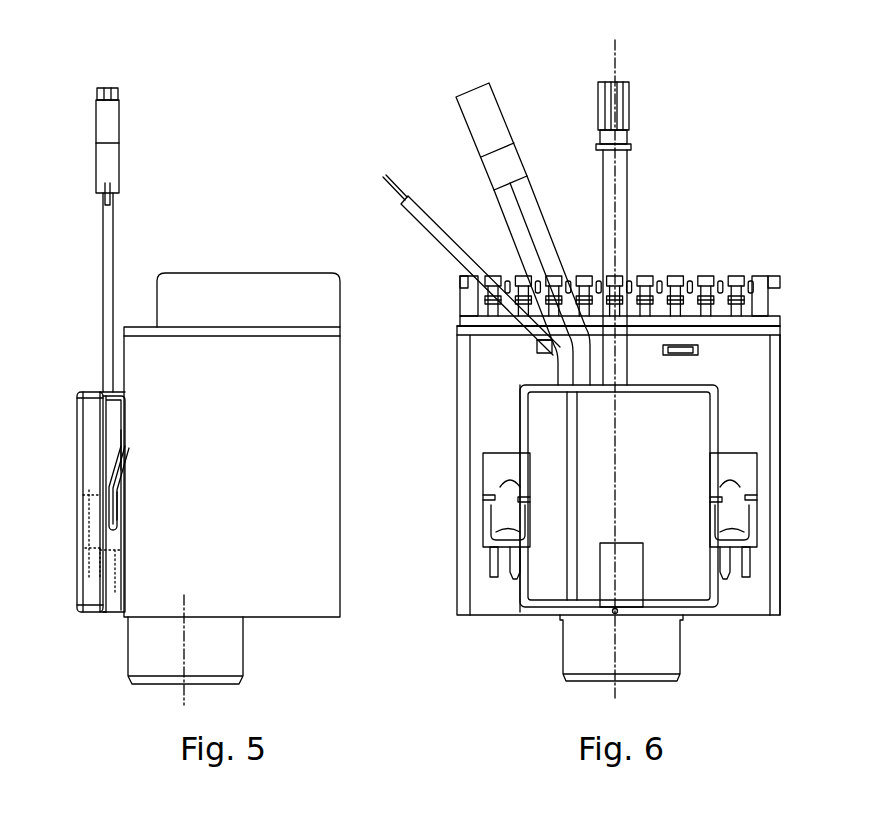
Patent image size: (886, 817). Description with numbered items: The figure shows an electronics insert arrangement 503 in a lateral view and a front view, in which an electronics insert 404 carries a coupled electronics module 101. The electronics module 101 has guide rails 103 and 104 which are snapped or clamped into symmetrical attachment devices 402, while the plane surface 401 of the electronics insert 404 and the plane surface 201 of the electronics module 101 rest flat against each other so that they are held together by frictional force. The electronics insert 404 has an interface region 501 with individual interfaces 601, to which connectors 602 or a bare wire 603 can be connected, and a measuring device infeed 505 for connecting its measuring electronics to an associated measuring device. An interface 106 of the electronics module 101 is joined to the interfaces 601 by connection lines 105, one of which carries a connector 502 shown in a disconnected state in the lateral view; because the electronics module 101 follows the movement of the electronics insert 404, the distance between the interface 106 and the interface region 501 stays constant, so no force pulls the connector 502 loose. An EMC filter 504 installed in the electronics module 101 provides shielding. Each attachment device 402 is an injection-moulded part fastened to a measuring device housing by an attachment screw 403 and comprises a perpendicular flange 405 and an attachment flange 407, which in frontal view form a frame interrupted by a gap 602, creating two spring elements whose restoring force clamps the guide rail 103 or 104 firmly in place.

In FIG. 5, the electronics module 101 is at (77, 458).
In FIG. 6, the electronics module 101 is at (714, 368).
In FIG. 5, the guide rail 103 is at (120, 463).
In FIG. 6, the guide rail 103 is at (709, 417).
In FIG. 6, the guide rail 104 is at (520, 426).
In FIG. 5, the connection line 105 is at (103, 279).
In FIG. 6, the connection line 105 is at (448, 237).
In FIG. 5, the interface 106 is at (103, 392).
In FIG. 6, the interface 106 is at (628, 382).
In FIG. 5, the plane surface 201 is at (118, 416).
In FIG. 5, the plane surface 401 is at (121, 438).
In FIG. 5, the attachment device 402 is at (88, 550).
In FIG. 6, the attachment device 402 is at (476, 490).
In FIG. 6, the attachment screw 403 is at (735, 563).
In FIG. 5, the electronics insert 404 is at (346, 406).
In FIG. 6, the electronics insert 404 is at (781, 346).
In FIG. 6, the perpendicular flange 405 is at (748, 535).
In FIG. 6, the attachment flange 407 is at (753, 498).
In FIG. 5, the interface region 501 is at (225, 273).
In FIG. 6, the interface region 501 is at (736, 276).
In FIG. 5, the connector 502 is at (109, 116).
In FIG. 6, the connector 502 is at (631, 102).
In FIG. 5, the electronics insert arrangement 503 is at (252, 146).
In FIG. 5, the EMC filter 504 is at (103, 612).
In FIG. 6, the EMC filter 504 is at (614, 616).
In FIG. 5, the measuring device infeed 505 is at (240, 645).
In FIG. 6, the measuring device infeed 505 is at (683, 648).
In FIG. 6, the interfaces 601 is at (650, 276).
In FIG. 6, the connector / gap 602 is at (488, 108).
In FIG. 6, the bare wire 603 is at (388, 180).